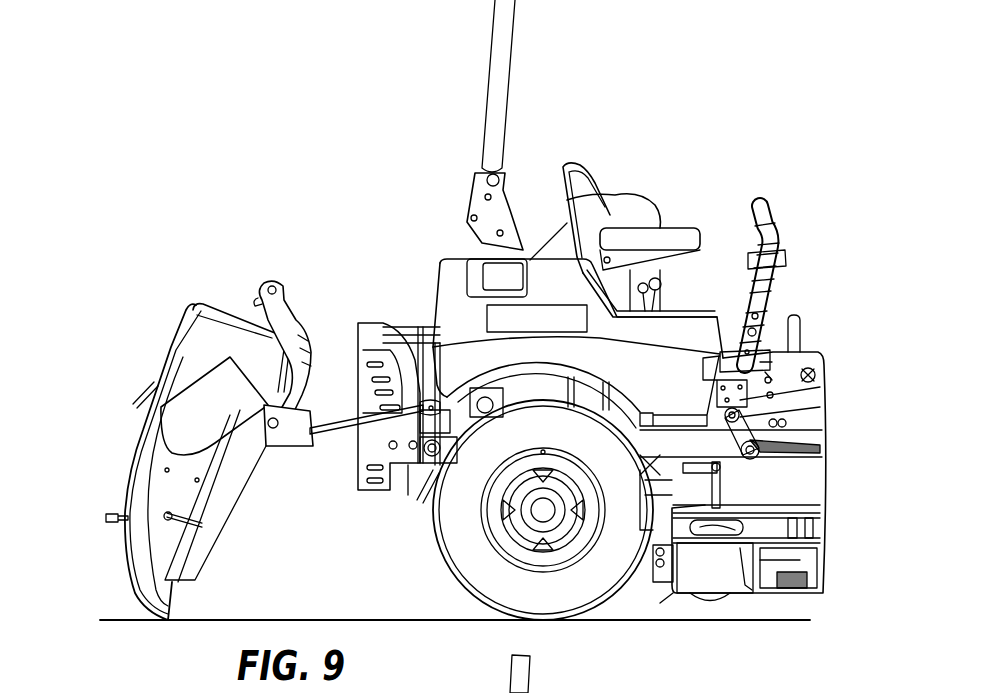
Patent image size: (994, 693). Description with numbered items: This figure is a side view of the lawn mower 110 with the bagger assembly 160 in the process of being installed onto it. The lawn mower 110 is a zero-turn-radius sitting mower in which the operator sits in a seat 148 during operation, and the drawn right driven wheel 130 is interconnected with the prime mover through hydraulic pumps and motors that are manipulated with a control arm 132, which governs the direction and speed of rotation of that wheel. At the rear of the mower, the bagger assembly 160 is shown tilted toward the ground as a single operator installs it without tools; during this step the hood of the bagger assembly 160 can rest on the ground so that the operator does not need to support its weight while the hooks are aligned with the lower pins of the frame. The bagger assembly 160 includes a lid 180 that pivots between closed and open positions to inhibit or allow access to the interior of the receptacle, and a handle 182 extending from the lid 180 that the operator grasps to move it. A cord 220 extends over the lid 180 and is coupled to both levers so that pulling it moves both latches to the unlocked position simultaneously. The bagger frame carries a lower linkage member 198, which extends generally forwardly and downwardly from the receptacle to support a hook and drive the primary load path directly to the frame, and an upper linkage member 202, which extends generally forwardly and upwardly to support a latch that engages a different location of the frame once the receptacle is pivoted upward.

The lawn mower 110 is at (637, 96).
The right driven wheel 130 is at (597, 583).
The control arm 132 is at (770, 210).
The seat 148 is at (728, 327).
The bagger assembly 160 is at (133, 182).
The lid 180 is at (133, 443).
The handle 182 is at (108, 514).
The lower linkage member 198 is at (348, 440).
The upper linkage member 202 is at (310, 337).
The cord 220 is at (184, 317).